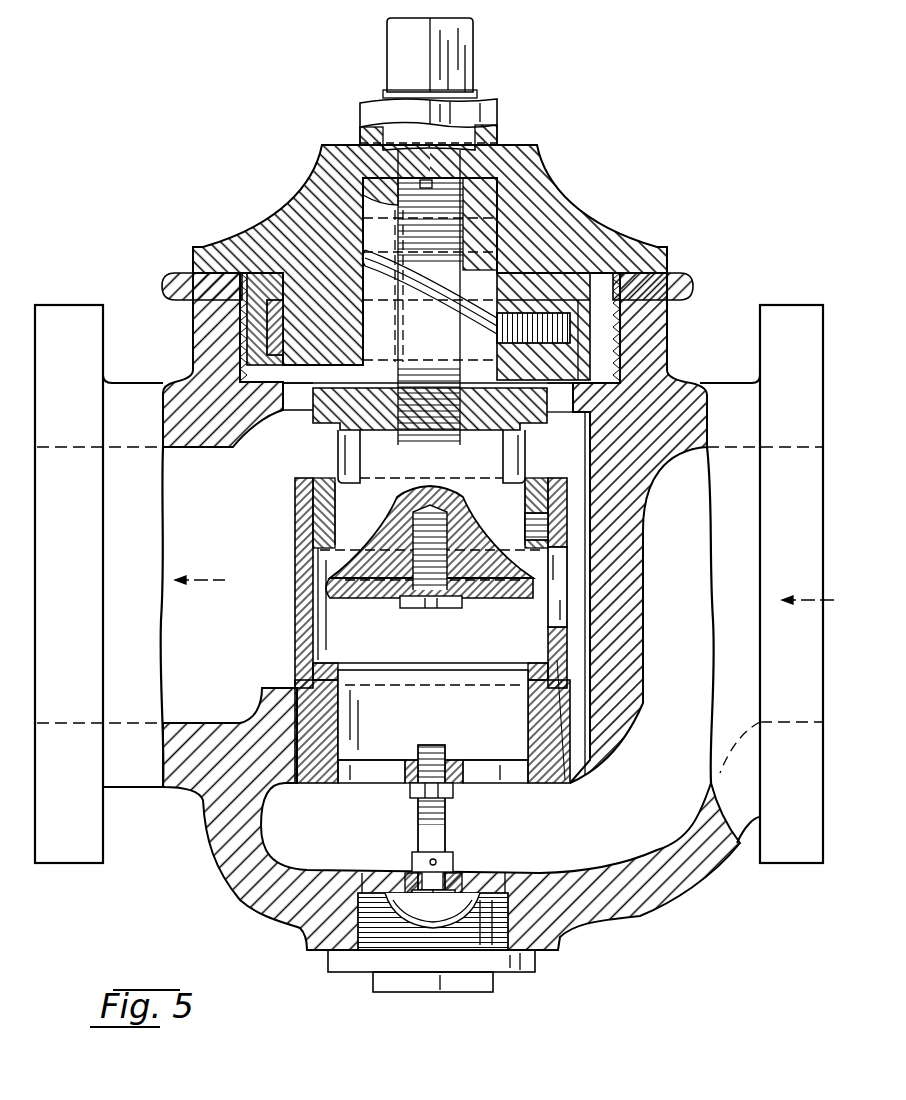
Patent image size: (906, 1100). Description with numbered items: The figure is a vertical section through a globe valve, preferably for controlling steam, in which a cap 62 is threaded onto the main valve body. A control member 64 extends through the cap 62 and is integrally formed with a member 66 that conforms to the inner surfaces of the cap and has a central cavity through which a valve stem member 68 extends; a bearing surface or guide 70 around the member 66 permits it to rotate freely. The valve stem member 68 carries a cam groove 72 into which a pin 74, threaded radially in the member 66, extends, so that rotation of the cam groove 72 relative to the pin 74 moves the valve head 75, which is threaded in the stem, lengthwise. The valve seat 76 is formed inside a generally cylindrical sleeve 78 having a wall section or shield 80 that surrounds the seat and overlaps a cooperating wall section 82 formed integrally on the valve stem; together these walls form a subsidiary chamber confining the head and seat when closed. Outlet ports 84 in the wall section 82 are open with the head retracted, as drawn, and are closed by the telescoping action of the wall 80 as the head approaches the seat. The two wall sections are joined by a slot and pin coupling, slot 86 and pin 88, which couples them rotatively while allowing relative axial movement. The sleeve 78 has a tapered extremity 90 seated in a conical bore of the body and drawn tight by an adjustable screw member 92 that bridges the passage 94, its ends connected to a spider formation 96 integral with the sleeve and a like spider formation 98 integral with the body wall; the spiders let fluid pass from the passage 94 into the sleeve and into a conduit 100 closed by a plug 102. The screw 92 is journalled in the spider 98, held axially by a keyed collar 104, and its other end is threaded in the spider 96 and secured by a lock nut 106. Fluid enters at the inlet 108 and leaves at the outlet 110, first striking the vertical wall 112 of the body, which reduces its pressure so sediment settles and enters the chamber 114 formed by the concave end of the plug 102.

The cap 62 is at (285, 215).
The control member 64 is at (400, 66).
The member 66 is at (565, 278).
The valve stem member 68 is at (487, 217).
The bearing surface or guide 70 is at (270, 320).
The cam groove 72 is at (440, 310).
The pin 74 is at (572, 328).
The valve head 75 is at (480, 532).
The valve seat 76 is at (528, 668).
The sleeve 78 is at (297, 632).
The wall section or shield 80 is at (297, 547).
The cooperating wall section 82 is at (323, 508).
The outlet ports 84 is at (347, 457).
The slot 86 is at (556, 601).
The pin 88 is at (560, 521).
The tapered extremity 90 is at (555, 745).
The adjustable screw member 92 is at (420, 828).
The passage 94 is at (480, 855).
The spider formation 96 is at (467, 767).
The spider formation 98 is at (462, 890).
The conduit 100 is at (390, 893).
The plug 102 is at (537, 968).
The collar 104 is at (450, 857).
The lock nut 106 is at (412, 792).
The inlet 108 is at (790, 447).
The outlet 110 is at (98, 700).
The vertical wall 112 is at (643, 650).
The chamber 114 is at (400, 923).